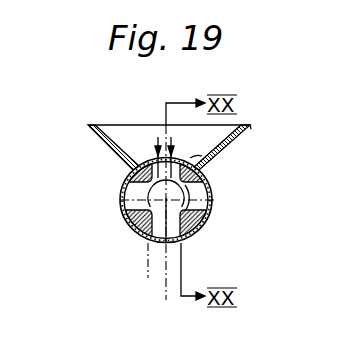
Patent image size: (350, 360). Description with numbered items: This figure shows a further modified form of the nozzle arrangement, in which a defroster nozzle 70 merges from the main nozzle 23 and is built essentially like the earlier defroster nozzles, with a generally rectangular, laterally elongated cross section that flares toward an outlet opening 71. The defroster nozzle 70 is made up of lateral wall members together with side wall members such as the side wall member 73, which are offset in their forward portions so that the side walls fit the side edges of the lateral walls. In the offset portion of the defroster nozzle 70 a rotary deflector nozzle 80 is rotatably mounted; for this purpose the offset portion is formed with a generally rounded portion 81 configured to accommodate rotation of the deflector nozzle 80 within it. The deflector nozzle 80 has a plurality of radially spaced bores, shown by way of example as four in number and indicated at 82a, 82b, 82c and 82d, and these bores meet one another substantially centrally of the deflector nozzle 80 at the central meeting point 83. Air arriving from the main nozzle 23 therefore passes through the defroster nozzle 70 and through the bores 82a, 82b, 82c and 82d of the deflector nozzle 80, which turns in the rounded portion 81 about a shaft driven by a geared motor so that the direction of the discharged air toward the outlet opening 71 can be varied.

The defroster nozzle 70 is at (166, 176).
The outlet opening 71 is at (107, 125).
The side wall member 73 is at (104, 138).
The rotary deflector nozzle 80 is at (195, 156).
The rounded portion 81 is at (126, 226).
The bore 82a is at (145, 168).
The bore 82b is at (124, 206).
The bore 82c is at (188, 236).
The bore 82d is at (210, 190).
The central meeting point of the bores 83 is at (208, 214).
The main nozzle 23 is at (148, 278).